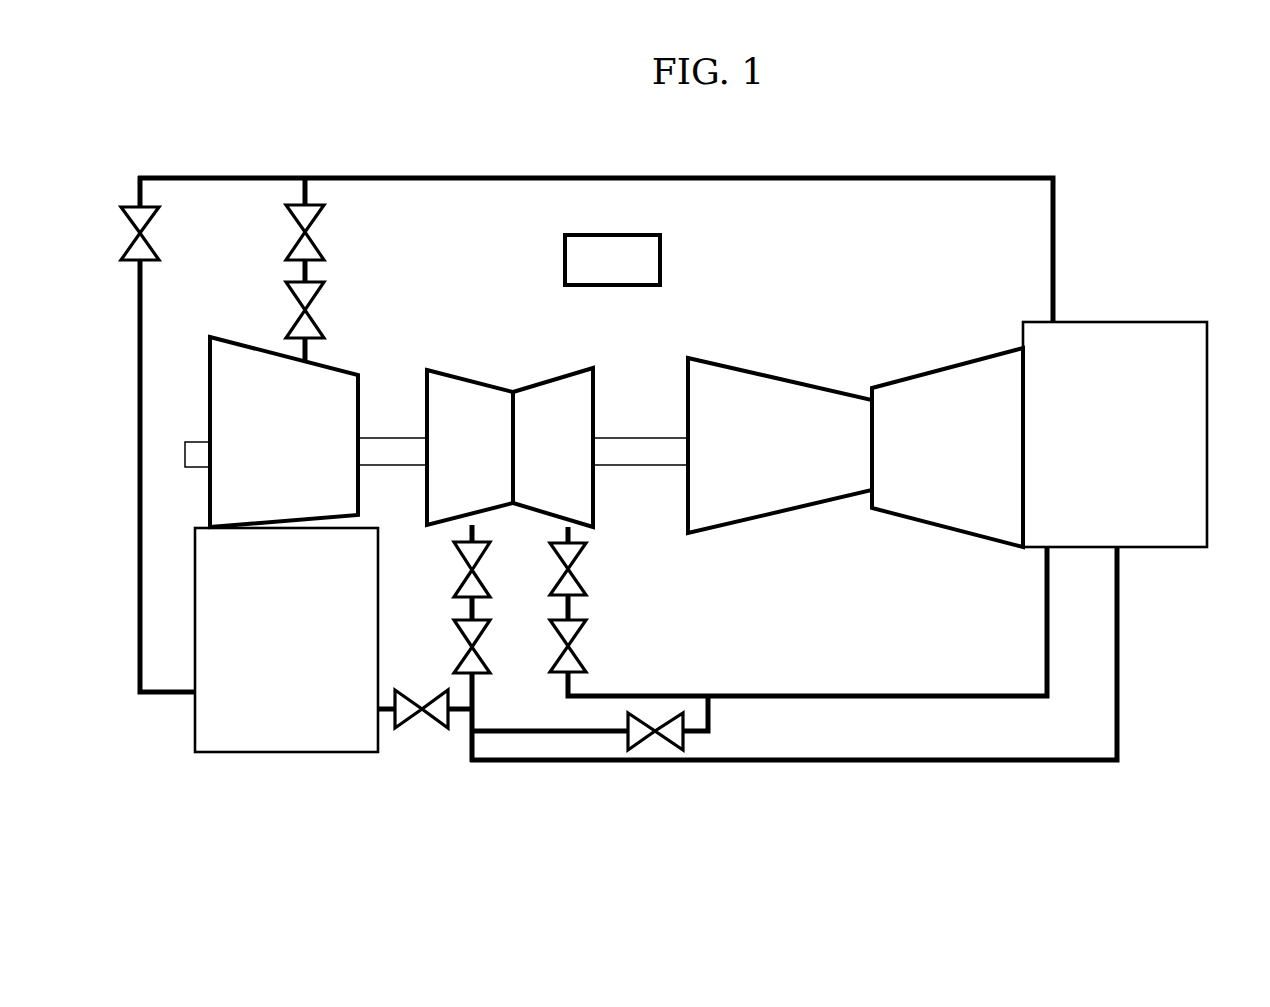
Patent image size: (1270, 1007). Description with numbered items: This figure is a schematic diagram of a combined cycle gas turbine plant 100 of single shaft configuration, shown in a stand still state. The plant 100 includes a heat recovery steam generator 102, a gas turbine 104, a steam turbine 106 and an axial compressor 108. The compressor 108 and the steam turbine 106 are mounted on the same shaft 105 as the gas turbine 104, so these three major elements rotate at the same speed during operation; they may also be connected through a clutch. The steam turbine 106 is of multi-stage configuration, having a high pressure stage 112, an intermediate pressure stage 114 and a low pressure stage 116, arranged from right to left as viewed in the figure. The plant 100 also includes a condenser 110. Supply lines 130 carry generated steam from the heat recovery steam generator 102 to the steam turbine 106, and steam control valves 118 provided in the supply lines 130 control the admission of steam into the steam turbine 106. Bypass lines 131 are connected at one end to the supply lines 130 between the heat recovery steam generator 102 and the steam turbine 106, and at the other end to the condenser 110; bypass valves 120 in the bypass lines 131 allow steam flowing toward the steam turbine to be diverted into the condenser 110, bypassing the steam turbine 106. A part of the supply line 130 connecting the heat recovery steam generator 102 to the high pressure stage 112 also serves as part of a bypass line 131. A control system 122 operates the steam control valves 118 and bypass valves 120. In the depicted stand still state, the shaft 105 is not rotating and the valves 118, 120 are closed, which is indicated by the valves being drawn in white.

The combined cycle gas turbine plant 100 is at (1113, 150).
The heat recovery steam generator 102 is at (1099, 447).
The gas turbine 104 is at (933, 449).
The shaft 105 is at (617, 437).
The steam turbine 106 is at (352, 358).
The axial compressor 108 is at (766, 453).
The condenser 110 is at (254, 649).
The high pressure stage 112 is at (534, 449).
The intermediate pressure stage 114 is at (451, 450).
The low pressure stage 116 is at (268, 459).
The steam control valves 118 is at (317, 300).
The bypass valves 120 is at (147, 226).
The control system 122 is at (612, 260).
The supply lines 130 is at (600, 176).
The bypass lines 131 is at (167, 177).